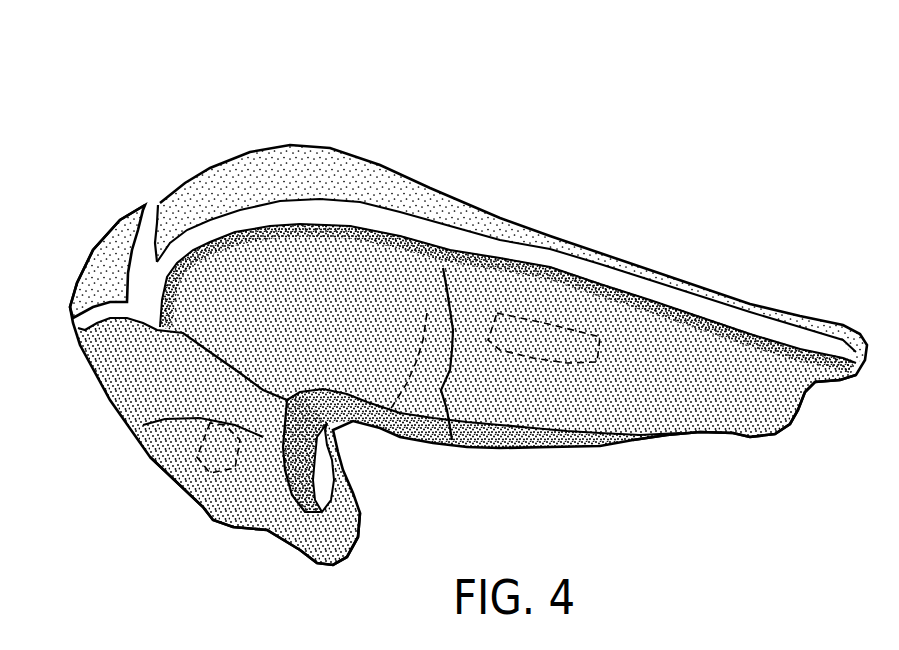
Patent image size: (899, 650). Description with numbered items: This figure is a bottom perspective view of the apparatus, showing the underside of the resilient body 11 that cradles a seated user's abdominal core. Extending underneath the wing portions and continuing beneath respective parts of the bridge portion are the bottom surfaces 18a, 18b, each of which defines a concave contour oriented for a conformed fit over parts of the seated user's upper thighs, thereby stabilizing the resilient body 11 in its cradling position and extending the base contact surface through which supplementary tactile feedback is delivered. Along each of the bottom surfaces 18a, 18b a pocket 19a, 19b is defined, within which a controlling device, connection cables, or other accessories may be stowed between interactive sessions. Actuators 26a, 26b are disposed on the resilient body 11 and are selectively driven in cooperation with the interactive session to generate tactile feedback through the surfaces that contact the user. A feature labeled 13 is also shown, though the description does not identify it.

The resilient body 11 is at (355, 150).
The notch 13 is at (143, 233).
The bottom surface 18a is at (667, 403).
The bottom surface 18b is at (207, 504).
The pocket 19a is at (452, 440).
The pocket 19b is at (143, 450).
The actuator 26a is at (557, 320).
The actuator 26b is at (180, 482).